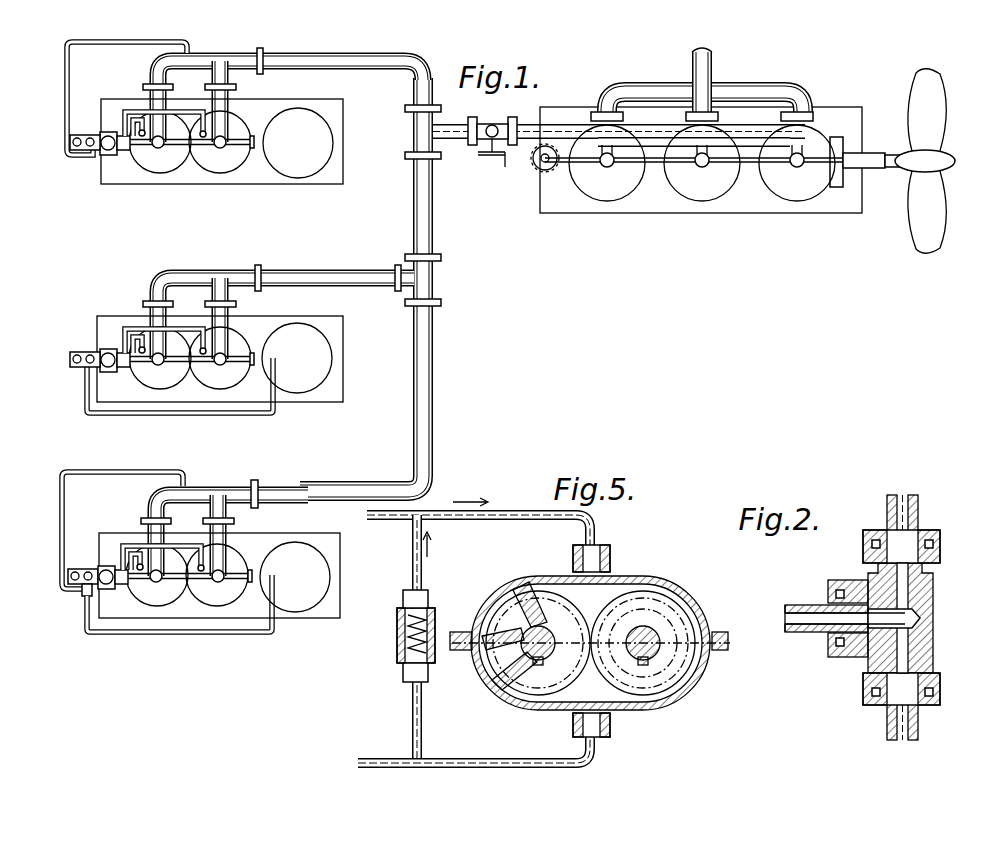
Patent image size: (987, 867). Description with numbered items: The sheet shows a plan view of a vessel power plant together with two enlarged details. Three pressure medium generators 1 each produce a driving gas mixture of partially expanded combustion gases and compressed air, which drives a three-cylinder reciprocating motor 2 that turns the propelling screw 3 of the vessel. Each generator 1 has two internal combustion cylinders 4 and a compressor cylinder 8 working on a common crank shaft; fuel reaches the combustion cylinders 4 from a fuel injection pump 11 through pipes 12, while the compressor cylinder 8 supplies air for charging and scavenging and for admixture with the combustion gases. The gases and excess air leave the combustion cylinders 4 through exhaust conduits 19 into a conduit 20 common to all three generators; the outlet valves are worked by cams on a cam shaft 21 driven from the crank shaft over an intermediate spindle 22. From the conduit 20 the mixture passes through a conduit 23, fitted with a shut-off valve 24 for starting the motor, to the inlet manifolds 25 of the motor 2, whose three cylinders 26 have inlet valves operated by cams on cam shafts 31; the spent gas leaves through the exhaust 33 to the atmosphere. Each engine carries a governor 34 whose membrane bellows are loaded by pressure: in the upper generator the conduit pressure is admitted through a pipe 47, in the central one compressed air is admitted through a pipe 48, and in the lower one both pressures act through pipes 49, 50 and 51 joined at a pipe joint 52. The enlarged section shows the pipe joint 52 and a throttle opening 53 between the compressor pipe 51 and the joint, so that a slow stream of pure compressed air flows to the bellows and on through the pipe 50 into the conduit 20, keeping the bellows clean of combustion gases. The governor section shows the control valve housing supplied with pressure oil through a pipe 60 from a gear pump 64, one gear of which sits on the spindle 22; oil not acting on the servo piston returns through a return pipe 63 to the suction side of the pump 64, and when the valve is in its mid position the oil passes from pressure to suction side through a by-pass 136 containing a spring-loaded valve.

In FIG. 1, the pressure medium generator 1 is at (323, 178).
In FIG. 1, the reciprocating motor 2 is at (567, 205).
In FIG. 1, the propelling screw 3 is at (920, 228).
In FIG. 1, the internal combustion cylinders 4 is at (207, 160).
In FIG. 1, the compressor cylinder 8 is at (283, 167).
In FIG. 1, the fuel injection pump 11 is at (128, 150).
In FIG. 1, the pipes 12 is at (143, 120).
In FIG. 1, the exhaust conduits 19 is at (217, 53).
In FIG. 1, the conduit 20 is at (433, 237).
In FIG. 1, the cam shaft 21 is at (238, 148).
In FIG. 5, the intermediate spindle 22 is at (505, 670).
In FIG. 1, the conduit 23 is at (450, 140).
In FIG. 1, the shut-off valve 24 is at (488, 140).
In FIG. 1, the inlet manifolds 25 is at (557, 123).
In FIG. 1, the cylinders 26 is at (758, 174).
In FIG. 1, the cam shafts 31 is at (773, 166).
In FIG. 1, the exhaust 33 is at (690, 83).
In FIG. 1, the governor 34 is at (108, 156).
In FIG. 1, the pipe 47 is at (116, 43).
In FIG. 1, the pipe 48 is at (222, 417).
In FIG. 1, the pipe 49 is at (62, 584).
In FIG. 2, the pipe 49 is at (918, 515).
In FIG. 1, the pipe 50 is at (65, 513).
In FIG. 2, the pipe 50 is at (800, 622).
In FIG. 1, the pipe 51 is at (263, 633).
In FIG. 2, the pipe 51 is at (918, 720).
In FIG. 1, the pipe joint 52 is at (88, 594).
In FIG. 2, the pipe joint 52 is at (933, 585).
In FIG. 2, the throttle opening 53 is at (933, 660).
In FIG. 5, the pipe 60 is at (565, 757).
In FIG. 5, the return pipe 63 is at (536, 522).
In FIG. 5, the pump 64 is at (518, 700).
In FIG. 5, the bypass pipe 136 is at (420, 572).